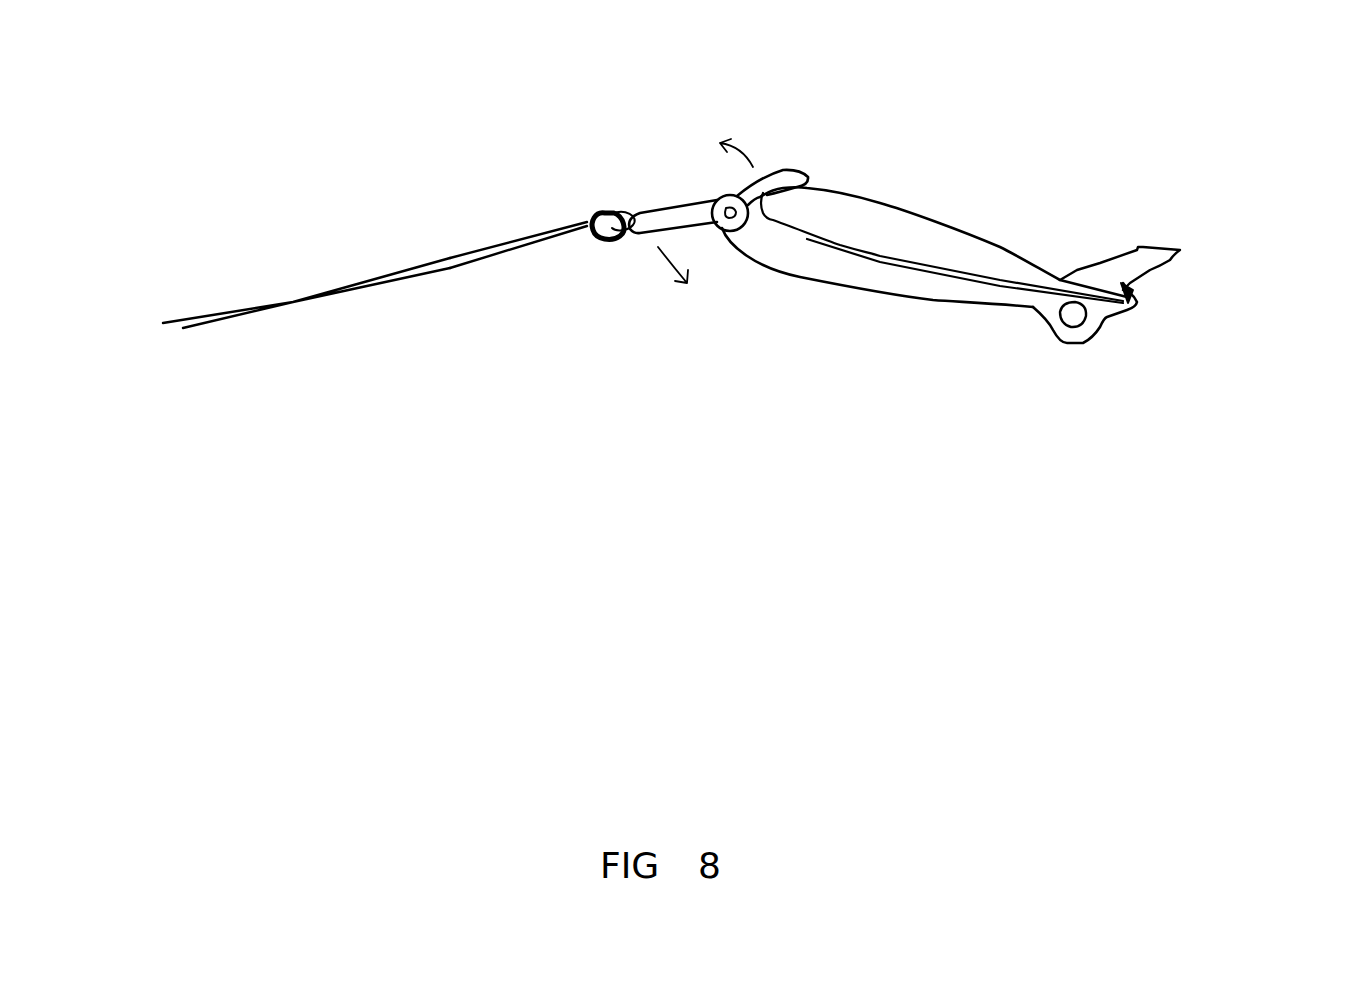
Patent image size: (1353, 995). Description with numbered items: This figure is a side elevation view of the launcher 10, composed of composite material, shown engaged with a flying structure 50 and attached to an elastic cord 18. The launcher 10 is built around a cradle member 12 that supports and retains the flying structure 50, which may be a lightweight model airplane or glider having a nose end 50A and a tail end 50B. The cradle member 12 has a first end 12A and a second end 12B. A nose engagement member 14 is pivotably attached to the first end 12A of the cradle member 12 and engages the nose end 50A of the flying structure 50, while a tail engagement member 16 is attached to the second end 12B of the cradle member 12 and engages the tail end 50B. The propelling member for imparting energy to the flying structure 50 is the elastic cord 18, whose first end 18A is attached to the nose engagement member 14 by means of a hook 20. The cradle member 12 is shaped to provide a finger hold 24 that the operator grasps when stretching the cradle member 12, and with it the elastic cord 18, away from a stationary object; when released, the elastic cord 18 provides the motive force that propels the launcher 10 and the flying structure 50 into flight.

The launcher 10 is at (980, 213).
The cradle member 12 is at (979, 195).
The first end of cradle member 12A is at (722, 232).
The second end of cradle member 12B is at (1123, 310).
The nose engagement member 14 is at (712, 197).
The tail engagement member 16 is at (1140, 303).
The elastic cord 18 is at (351, 287).
The first end of elastic cord 18A is at (577, 237).
The hook 20 is at (595, 208).
The finger hold 24 is at (1085, 322).
The flying structure 50 is at (960, 220).
The nose end of flying structure 50A is at (760, 185).
The tail end of flying structure 50B is at (1153, 248).